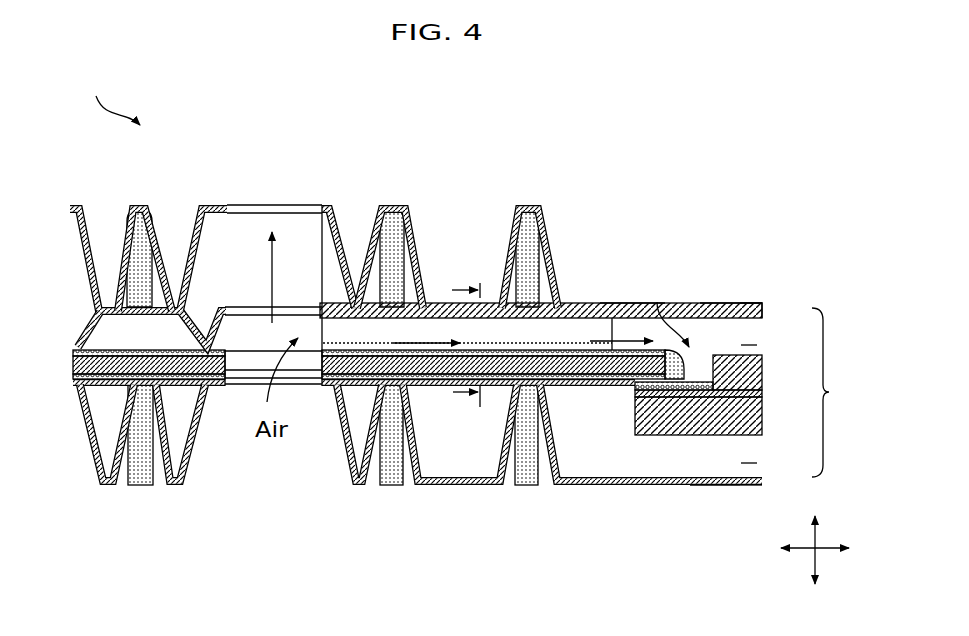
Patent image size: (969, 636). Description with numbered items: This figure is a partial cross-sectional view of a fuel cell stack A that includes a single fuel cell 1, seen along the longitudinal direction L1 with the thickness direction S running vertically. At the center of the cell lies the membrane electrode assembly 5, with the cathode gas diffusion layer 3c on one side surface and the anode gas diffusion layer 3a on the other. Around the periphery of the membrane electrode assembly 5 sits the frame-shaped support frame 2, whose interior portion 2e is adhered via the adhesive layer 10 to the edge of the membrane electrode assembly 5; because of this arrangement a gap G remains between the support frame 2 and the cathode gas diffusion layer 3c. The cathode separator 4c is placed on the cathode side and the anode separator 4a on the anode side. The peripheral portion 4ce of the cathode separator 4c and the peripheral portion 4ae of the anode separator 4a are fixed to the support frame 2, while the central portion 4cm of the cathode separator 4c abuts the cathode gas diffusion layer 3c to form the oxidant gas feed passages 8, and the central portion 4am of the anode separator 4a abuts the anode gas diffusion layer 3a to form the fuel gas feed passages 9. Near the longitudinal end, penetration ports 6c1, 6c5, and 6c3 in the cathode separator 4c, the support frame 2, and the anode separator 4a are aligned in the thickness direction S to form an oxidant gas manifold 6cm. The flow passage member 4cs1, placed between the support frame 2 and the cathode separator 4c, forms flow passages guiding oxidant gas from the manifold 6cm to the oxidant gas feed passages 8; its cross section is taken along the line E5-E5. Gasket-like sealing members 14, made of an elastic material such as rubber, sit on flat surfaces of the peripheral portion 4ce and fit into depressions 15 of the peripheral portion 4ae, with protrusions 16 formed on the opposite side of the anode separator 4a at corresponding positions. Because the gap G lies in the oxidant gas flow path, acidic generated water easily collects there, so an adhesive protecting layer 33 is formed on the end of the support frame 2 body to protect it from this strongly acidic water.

The single fuel cell 1 is at (827, 392).
The support frame 2 is at (487, 440).
The interior portion of the support frame 2e is at (636, 437).
The anode gas diffusion layer 3a is at (712, 487).
The cathode gas diffusion layer 3c is at (735, 305).
The anode separator 4a is at (557, 486).
The peripheral portion of the anode separator 4ae is at (108, 491).
The central portion of the anode separator 4am is at (683, 488).
The cathode separator 4c is at (583, 311).
The peripheral portion of the cathode separator 4ce is at (219, 294).
The central portion of the cathode separator 4cm is at (723, 305).
The flow passage member 4cs1 is at (628, 305).
The membrane electrode assembly 5 is at (769, 391).
The penetration port for an oxidant gas manifold 6c1 is at (323, 310).
The penetration port for an oxidant gas manifold 6c3 is at (246, 387).
The penetration port for an oxidant gas manifold 6c5 is at (321, 367).
The oxidant gas manifold 6cm is at (258, 195).
The oxidant gas feed passage 8 is at (749, 333).
The fuel gas feed passage 9 is at (749, 451).
The adhesive layer 10 is at (697, 383).
The sealing member 14 is at (133, 213).
The depression 15 is at (122, 484).
The protrusion 16 is at (165, 433).
The adhesive protecting layer 33 is at (685, 397).
The fuel cell stack A is at (112, 97).
The gap G is at (669, 312).
The line E5- E5 is at (461, 343).
The longitudinal direction L1 is at (806, 563).
The thickness direction S is at (806, 564).